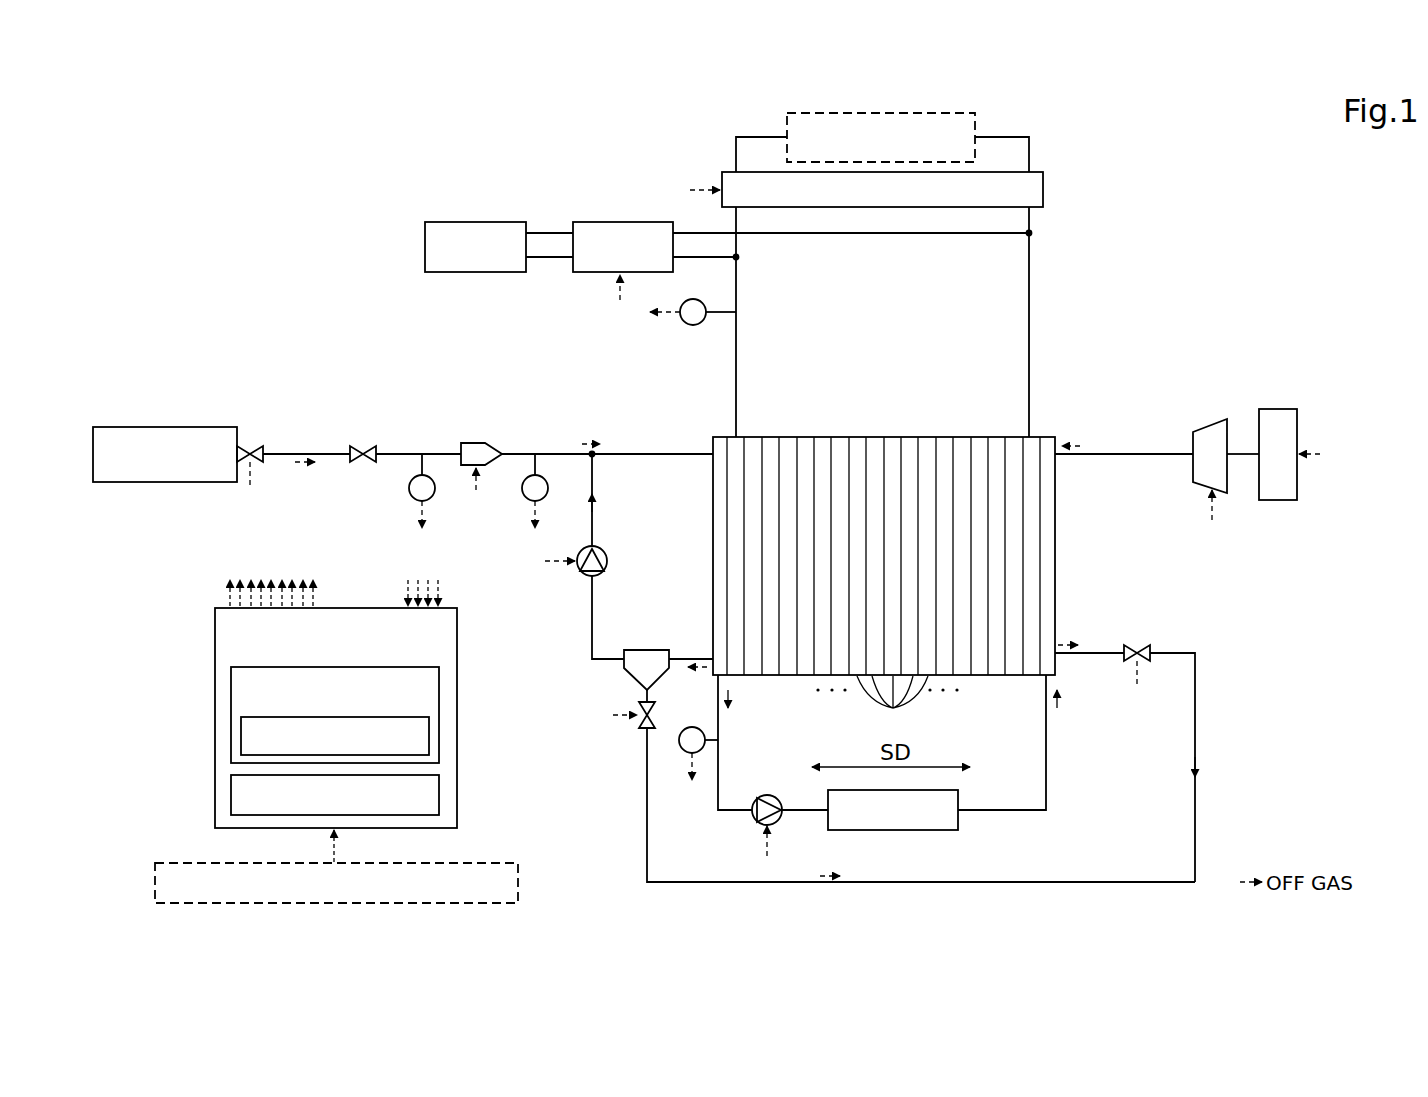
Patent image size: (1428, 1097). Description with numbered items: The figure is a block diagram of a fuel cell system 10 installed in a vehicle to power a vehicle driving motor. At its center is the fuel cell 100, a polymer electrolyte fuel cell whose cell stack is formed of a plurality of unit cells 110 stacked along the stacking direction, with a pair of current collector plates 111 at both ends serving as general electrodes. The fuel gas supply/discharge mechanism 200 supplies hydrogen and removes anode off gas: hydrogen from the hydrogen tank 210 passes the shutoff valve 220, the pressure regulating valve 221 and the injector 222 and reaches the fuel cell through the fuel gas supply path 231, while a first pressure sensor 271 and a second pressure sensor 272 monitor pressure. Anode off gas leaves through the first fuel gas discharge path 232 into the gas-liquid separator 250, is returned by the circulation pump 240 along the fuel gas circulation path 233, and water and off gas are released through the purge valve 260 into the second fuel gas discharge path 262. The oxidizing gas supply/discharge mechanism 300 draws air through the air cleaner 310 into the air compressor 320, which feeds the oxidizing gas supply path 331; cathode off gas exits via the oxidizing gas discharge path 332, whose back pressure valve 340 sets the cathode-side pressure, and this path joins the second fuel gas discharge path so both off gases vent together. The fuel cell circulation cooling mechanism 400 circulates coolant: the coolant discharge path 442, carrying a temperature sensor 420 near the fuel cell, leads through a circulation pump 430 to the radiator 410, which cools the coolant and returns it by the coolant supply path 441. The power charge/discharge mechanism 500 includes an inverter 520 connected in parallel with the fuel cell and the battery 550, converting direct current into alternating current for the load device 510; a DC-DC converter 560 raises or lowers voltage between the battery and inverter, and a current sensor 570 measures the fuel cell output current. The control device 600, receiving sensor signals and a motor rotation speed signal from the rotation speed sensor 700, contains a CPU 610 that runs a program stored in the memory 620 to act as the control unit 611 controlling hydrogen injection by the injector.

The fuel cell system 10 is at (252, 180).
The fuel cell 100 is at (1070, 576).
The unit cell 110 is at (887, 704).
The current collector plate 111 is at (738, 676).
The fuel gas supply/discharge mechanism 200 is at (210, 375).
The hydrogen tank 210 is at (157, 427).
The shutoff valve 220 is at (251, 445).
The pressure regulating valve 221 is at (363, 446).
The injector 222 is at (475, 442).
The fuel gas supply path 231 is at (627, 452).
The first fuel gas discharge path 232 is at (683, 656).
The fuel gas circulation path 233 is at (590, 622).
The circulation pump 240 is at (603, 552).
The gas-liquid separator 250 is at (645, 649).
The purge valve 260 is at (636, 730).
The second fuel gas discharge path 262 is at (645, 831).
The first pressure sensor 271 is at (409, 493).
The second pressure sensor 272 is at (522, 493).
The oxidizing gas supply/discharge mechanism 300 is at (1120, 395).
The air cleaner 310 is at (1283, 409).
The air compressor 320 is at (1200, 432).
The oxidizing gas supply path 331 is at (1105, 460).
The oxidizing gas discharge path 332 is at (1093, 660).
The back pressure valve 340 is at (1138, 645).
The fuel cell circulation cooling mechanism 400 is at (1072, 792).
The radiator 410 is at (883, 830).
The temperature sensor 420 is at (688, 727).
The circulation pump 430 is at (773, 788).
The coolant supply path 441 is at (985, 830).
The coolant discharge path 442 is at (717, 790).
The power charge/discharge mechanism 500 is at (1102, 205).
The load device 510 is at (975, 117).
The inverter 520 is at (1043, 190).
The battery 550 is at (440, 222).
The DC-DC converter 560 is at (590, 222).
The current sensor 570 is at (694, 299).
The control device 600 is at (457, 652).
The CPU 610 is at (440, 693).
The control unit 611 is at (430, 738).
The memory 620 is at (440, 797).
The rotation speed sensor 700 is at (518, 884).